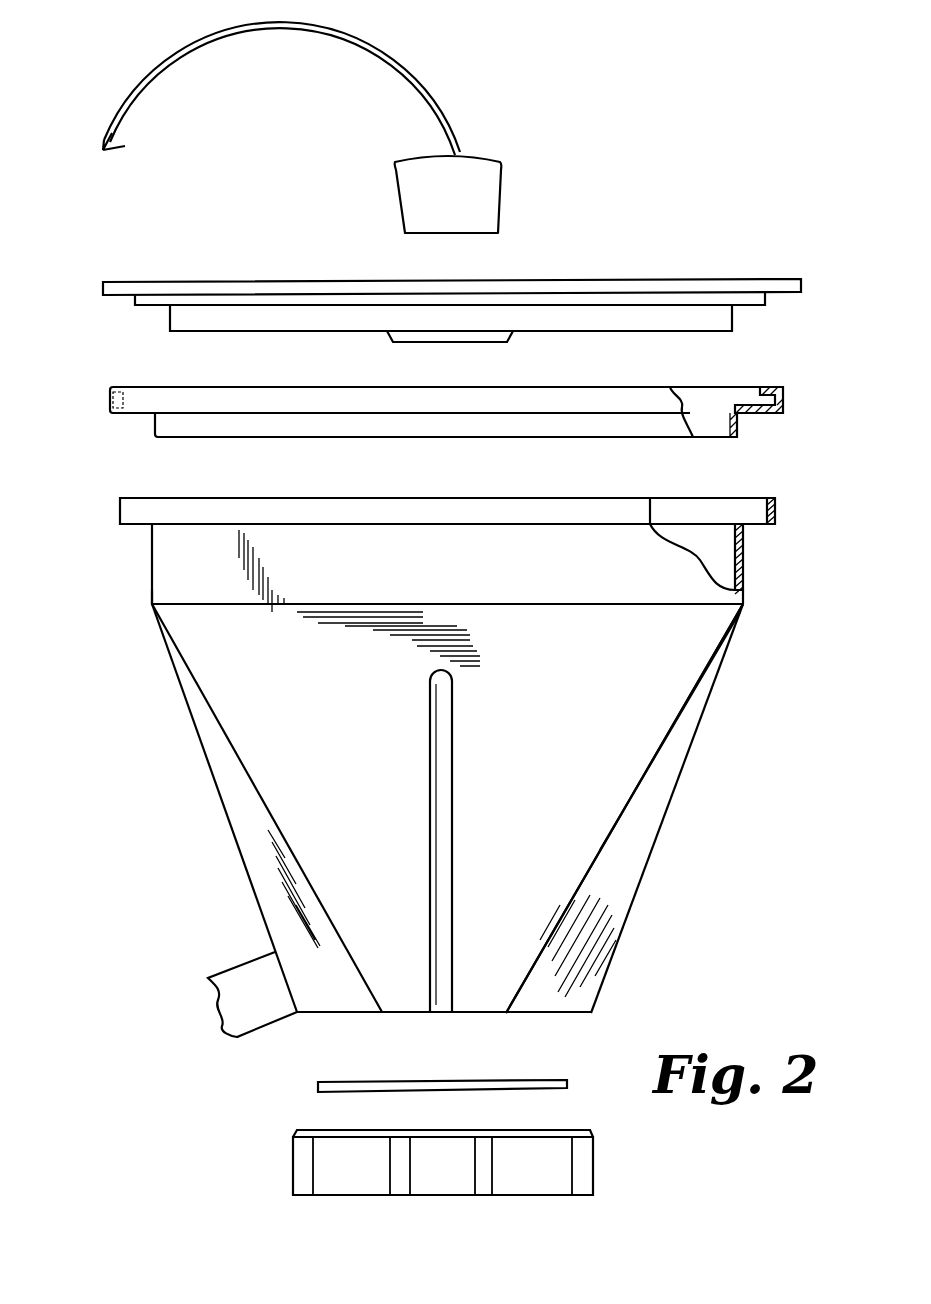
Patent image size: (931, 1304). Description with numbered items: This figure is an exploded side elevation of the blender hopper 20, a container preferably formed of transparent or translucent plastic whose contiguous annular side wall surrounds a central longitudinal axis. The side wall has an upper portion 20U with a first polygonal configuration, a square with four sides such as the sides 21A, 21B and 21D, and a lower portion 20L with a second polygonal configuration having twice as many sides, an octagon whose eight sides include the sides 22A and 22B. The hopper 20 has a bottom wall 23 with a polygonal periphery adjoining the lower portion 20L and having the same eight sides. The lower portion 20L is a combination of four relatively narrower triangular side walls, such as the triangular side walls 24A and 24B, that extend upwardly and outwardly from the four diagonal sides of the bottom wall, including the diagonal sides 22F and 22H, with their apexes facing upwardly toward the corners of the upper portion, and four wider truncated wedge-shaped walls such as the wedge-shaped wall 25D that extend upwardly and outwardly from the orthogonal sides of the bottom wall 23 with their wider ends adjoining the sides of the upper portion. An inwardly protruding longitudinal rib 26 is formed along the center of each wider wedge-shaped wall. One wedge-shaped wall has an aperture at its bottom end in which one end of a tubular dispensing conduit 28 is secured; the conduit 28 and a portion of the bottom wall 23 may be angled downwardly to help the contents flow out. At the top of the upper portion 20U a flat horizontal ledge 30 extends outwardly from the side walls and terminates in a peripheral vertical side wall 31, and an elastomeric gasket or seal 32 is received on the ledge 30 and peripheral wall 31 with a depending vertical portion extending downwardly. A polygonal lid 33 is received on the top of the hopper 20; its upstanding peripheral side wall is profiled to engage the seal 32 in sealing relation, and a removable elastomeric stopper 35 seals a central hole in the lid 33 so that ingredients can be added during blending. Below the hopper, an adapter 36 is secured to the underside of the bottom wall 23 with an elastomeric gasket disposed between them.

The blender container or hopper 20 is at (853, 447).
The upper portion 20U is at (152, 572).
The lower portion 20L is at (702, 722).
The side 21A is at (152, 586).
The side 21B is at (744, 565).
The side 21D is at (437, 581).
The side 22A is at (226, 812).
The side 22B is at (648, 870).
The diagonal side 22F is at (266, 900).
The diagonal side 22H is at (604, 946).
The bottom wall 23 is at (474, 1017).
The triangular side wall 24A is at (268, 834).
The triangular side wall 24B is at (618, 850).
The truncated wedge-shaped wall 25D is at (565, 731).
The longitudinal rib 26 is at (452, 760).
The tubular dispensing conduit 28 is at (262, 1018).
The flat horizontal ledge 30 is at (747, 497).
The peripheral vertical side wall 31 is at (776, 512).
The elastomeric gasket or seal 32 is at (715, 387).
The polygonal lid 33 is at (672, 281).
The removable elastomeric stopper 35 is at (490, 185).
The adapter 36 is at (594, 1160).